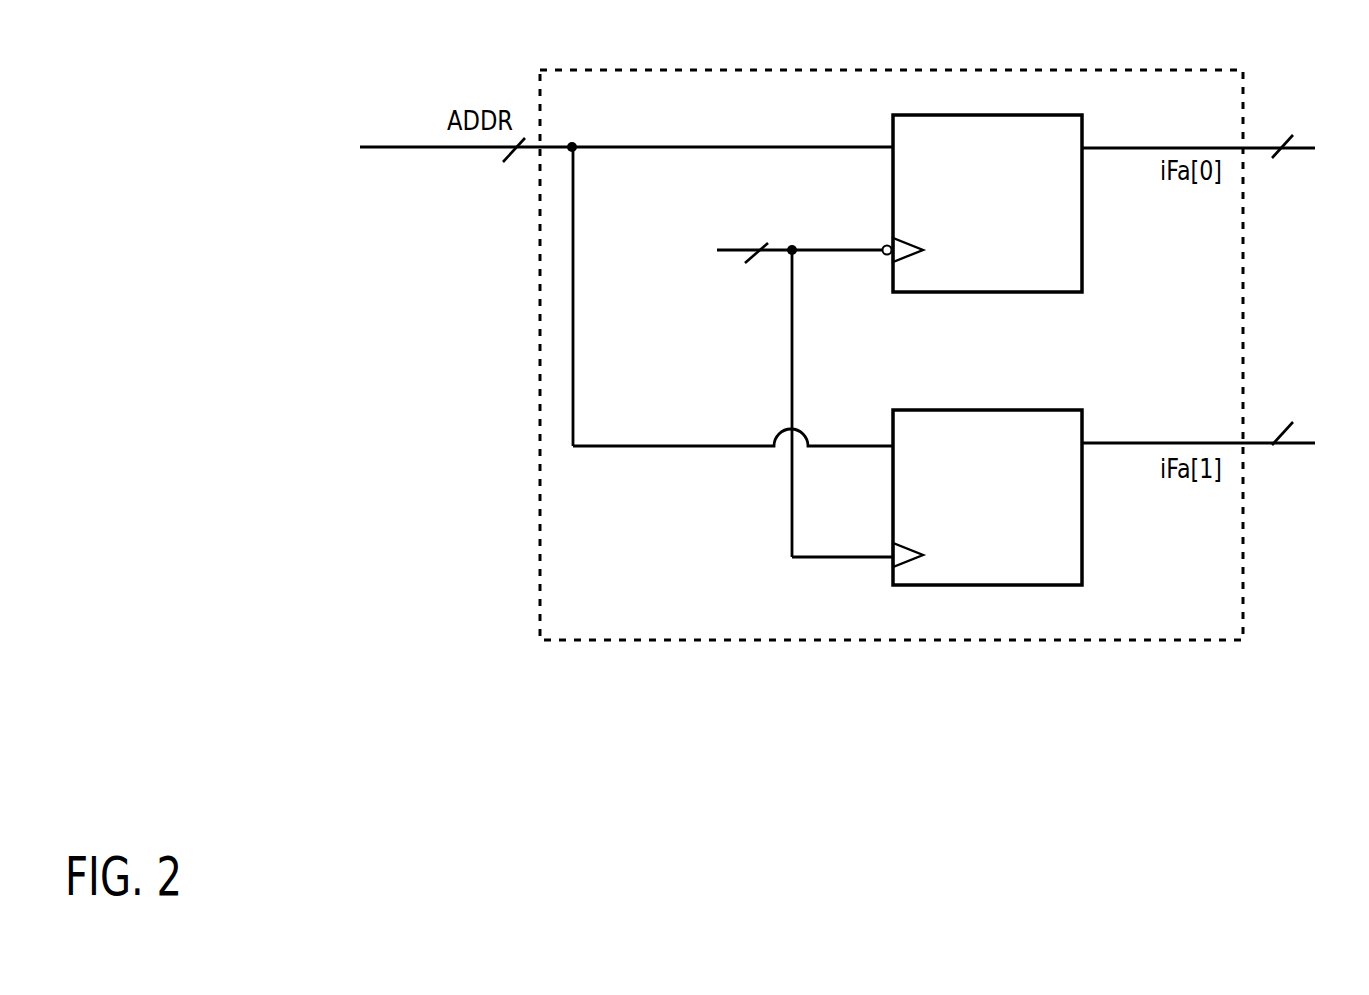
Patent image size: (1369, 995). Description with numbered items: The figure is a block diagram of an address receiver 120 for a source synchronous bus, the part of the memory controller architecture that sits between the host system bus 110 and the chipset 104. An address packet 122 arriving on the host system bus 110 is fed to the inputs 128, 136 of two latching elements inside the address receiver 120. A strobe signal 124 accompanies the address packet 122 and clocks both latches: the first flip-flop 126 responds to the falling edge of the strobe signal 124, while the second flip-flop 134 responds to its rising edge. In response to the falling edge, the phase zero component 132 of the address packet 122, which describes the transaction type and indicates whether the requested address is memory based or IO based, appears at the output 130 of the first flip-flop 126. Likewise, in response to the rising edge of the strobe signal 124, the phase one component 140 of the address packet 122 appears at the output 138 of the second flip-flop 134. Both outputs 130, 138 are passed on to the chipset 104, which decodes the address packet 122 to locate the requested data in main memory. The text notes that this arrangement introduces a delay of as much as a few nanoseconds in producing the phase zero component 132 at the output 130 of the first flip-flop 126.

The chipset 104 is at (1304, 286).
The host system bus 110 is at (378, 150).
The address receiver 120 is at (891, 377).
The address packet 122 is at (503, 168).
The strobe signal 124 is at (780, 384).
The first flip-flop 126 is at (1000, 292).
The input of first flip-flop 128 is at (891, 150).
The output of the first flip-flop 130 is at (1085, 150).
The phase zero component 132 is at (1277, 163).
The second flip-flop 134 is at (1000, 585).
The input of second flip-flop 136 is at (891, 448).
The output of the second flip-flop 138 is at (1085, 445).
The phase one component 140 is at (1277, 456).